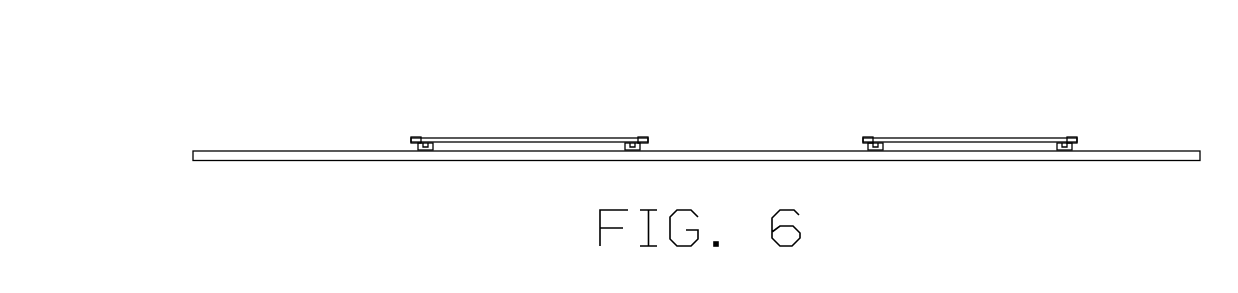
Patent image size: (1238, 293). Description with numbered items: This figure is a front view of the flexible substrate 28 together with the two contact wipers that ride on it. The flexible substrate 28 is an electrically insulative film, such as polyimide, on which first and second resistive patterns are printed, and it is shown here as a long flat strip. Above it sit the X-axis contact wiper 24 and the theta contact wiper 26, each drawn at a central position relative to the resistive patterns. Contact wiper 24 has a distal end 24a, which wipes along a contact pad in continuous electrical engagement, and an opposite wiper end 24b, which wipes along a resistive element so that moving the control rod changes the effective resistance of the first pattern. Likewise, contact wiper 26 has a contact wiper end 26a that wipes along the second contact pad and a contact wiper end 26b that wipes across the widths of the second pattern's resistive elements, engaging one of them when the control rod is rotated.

The contact wiper 24 is at (585, 137).
The distal end of contact wiper 24a is at (638, 140).
The wiper end 24b is at (422, 143).
The contact wiper 26 is at (1055, 138).
The contact wiper end 26a is at (872, 143).
The contact wiper end 26b is at (1072, 140).
The flexible substrate 28 is at (1131, 155).